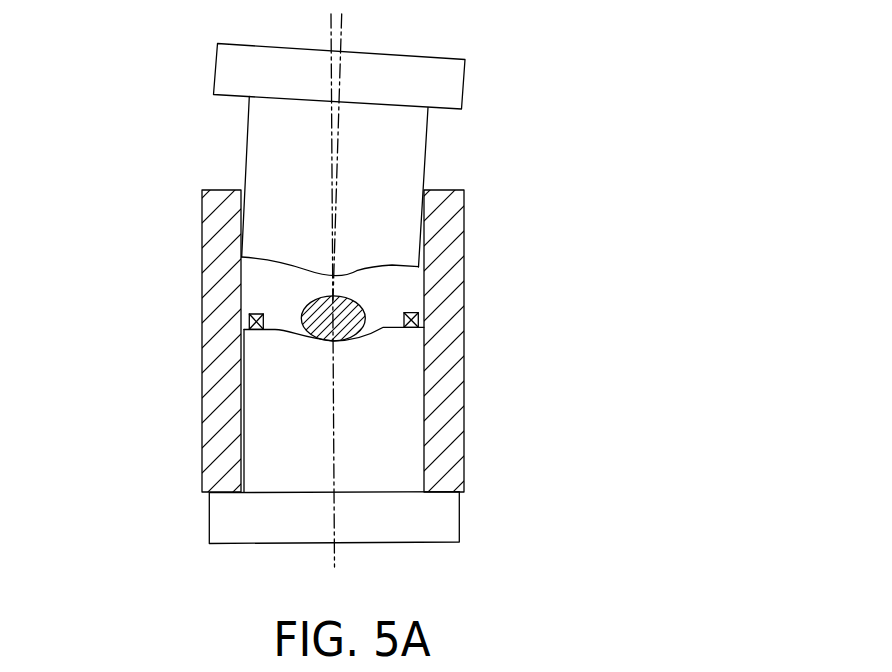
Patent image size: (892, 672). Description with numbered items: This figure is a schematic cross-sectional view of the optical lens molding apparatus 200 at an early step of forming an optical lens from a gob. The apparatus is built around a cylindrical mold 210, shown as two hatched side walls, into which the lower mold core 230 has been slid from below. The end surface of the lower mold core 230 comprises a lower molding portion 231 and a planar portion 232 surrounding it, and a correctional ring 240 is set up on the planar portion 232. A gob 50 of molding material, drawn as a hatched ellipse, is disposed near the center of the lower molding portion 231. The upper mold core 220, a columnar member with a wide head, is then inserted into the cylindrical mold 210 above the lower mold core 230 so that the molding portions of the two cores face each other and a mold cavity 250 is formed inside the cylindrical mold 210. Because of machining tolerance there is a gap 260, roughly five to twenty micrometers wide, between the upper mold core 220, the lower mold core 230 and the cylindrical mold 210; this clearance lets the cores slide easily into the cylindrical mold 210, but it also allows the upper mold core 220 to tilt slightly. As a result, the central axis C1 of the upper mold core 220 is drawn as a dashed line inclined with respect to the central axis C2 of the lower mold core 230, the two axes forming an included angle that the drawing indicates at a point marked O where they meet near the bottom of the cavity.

The optical lens molding apparatus 200 is at (655, 574).
The cylindrical mold 210 is at (442, 445).
The upper mold core 220 is at (443, 83).
The lower mold core 230 is at (438, 520).
The lower molding portion 231 is at (357, 340).
The planar portion 232 is at (273, 331).
The correctional ring 240 is at (249, 318).
The mold cavity 250 is at (282, 308).
The gap 260 is at (419, 259).
The gob 50 is at (361, 309).
The central axis of the upper mold core C1 is at (341, 30).
The central axis of the lower mold core C2 is at (335, 560).
The pivot center O is at (332, 454).